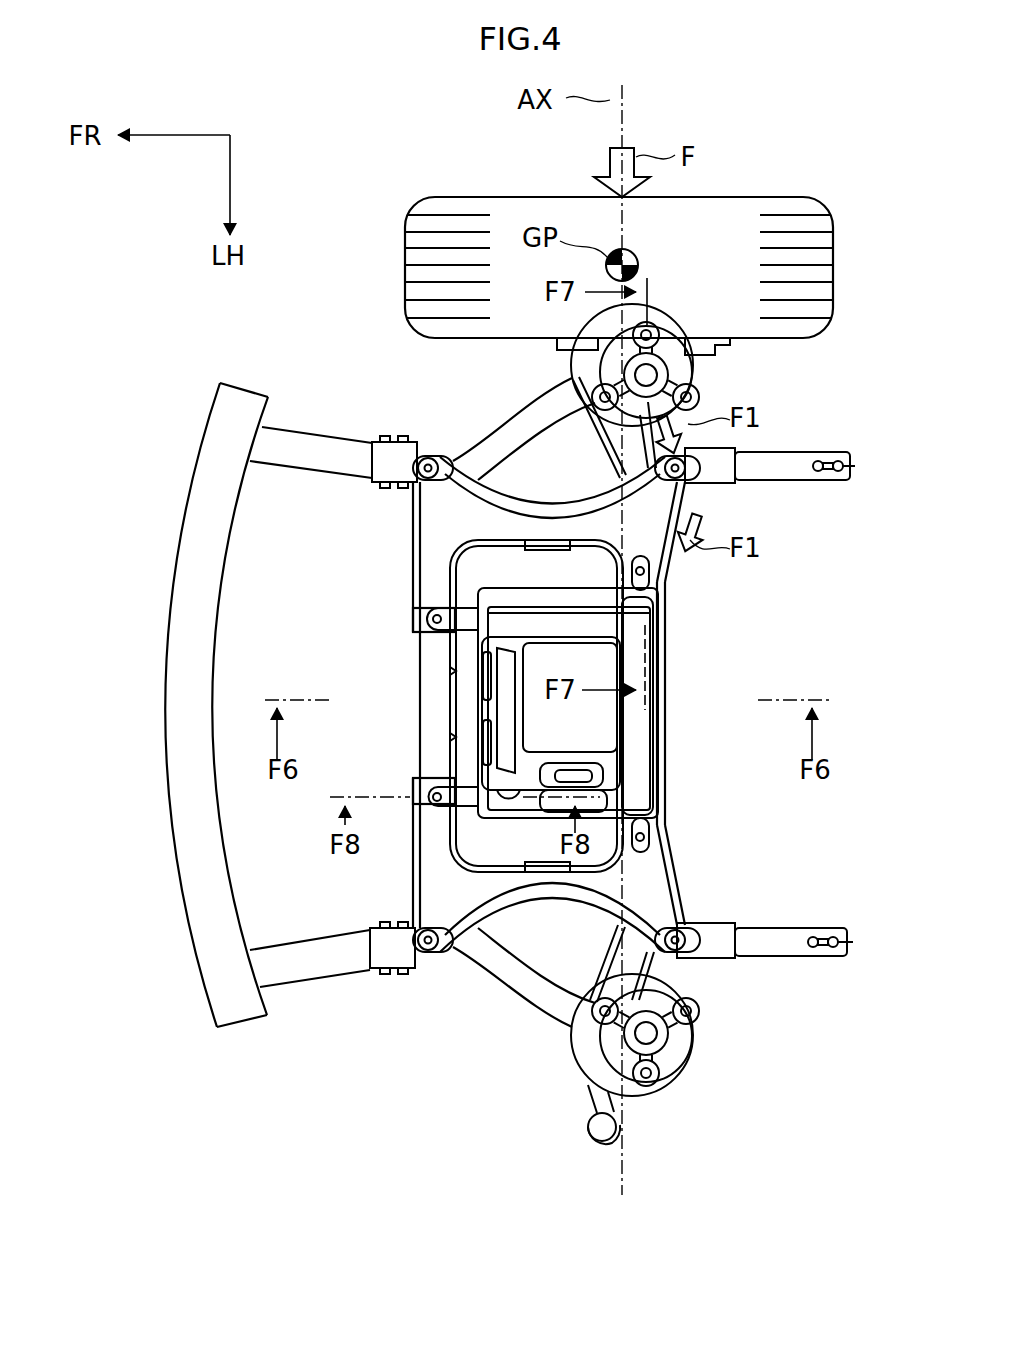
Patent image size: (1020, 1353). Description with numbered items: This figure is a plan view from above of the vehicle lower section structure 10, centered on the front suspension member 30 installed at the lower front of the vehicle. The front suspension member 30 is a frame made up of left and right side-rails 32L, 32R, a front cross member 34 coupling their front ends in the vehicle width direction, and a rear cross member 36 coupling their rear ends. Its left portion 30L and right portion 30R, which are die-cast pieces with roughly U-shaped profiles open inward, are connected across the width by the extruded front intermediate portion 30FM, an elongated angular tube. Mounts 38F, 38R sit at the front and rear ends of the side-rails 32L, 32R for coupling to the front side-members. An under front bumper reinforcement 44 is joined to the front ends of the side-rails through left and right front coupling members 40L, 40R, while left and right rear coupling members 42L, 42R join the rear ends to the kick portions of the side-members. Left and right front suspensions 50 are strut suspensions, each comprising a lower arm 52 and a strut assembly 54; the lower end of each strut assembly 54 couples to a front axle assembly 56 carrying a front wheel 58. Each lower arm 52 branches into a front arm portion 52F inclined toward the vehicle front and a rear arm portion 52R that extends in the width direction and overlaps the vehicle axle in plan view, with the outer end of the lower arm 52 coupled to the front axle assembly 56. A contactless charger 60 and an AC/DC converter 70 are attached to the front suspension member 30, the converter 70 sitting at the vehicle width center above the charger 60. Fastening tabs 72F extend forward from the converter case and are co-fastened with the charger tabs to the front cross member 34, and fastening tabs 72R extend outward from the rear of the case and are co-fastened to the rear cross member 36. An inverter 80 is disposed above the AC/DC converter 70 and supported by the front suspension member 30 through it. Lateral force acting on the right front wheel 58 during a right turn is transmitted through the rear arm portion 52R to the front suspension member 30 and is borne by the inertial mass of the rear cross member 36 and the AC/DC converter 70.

The vehicle lower section structure 10 is at (430, 1133).
The front suspension member 30 is at (525, 708).
The right portion 30R is at (428, 518).
The left portion 30L is at (428, 888).
The front intermediate portion 30FM is at (416, 720).
The right side-rail 32R is at (552, 535).
The left side-rail 32L is at (552, 897).
The front cross member 34 is at (407, 688).
The rear cross member 36 is at (684, 870).
The front mount 38F is at (418, 462).
The rear mount 38R is at (686, 470).
The right front coupling member 40R is at (310, 443).
The left front coupling member 40L is at (298, 972).
The right rear coupling member 42R is at (793, 450).
The left rear coupling member 42L is at (807, 957).
The under front bumper reinforcement 44 is at (215, 672).
The front suspension 50 is at (520, 364).
The lower arm 52 is at (518, 410).
The front arm portion 52F is at (502, 452).
The rear arm portion 52R is at (597, 435).
The strut assembly 54 is at (661, 320).
The front axle assembly 56 is at (707, 357).
The front wheel 58 is at (507, 197).
The contactless charger 60 is at (441, 655).
The AC/DC converter 70 is at (582, 583).
The fastening tab 72F is at (470, 607).
The fastening tab 72R is at (660, 577).
The inverter 80 is at (508, 802).